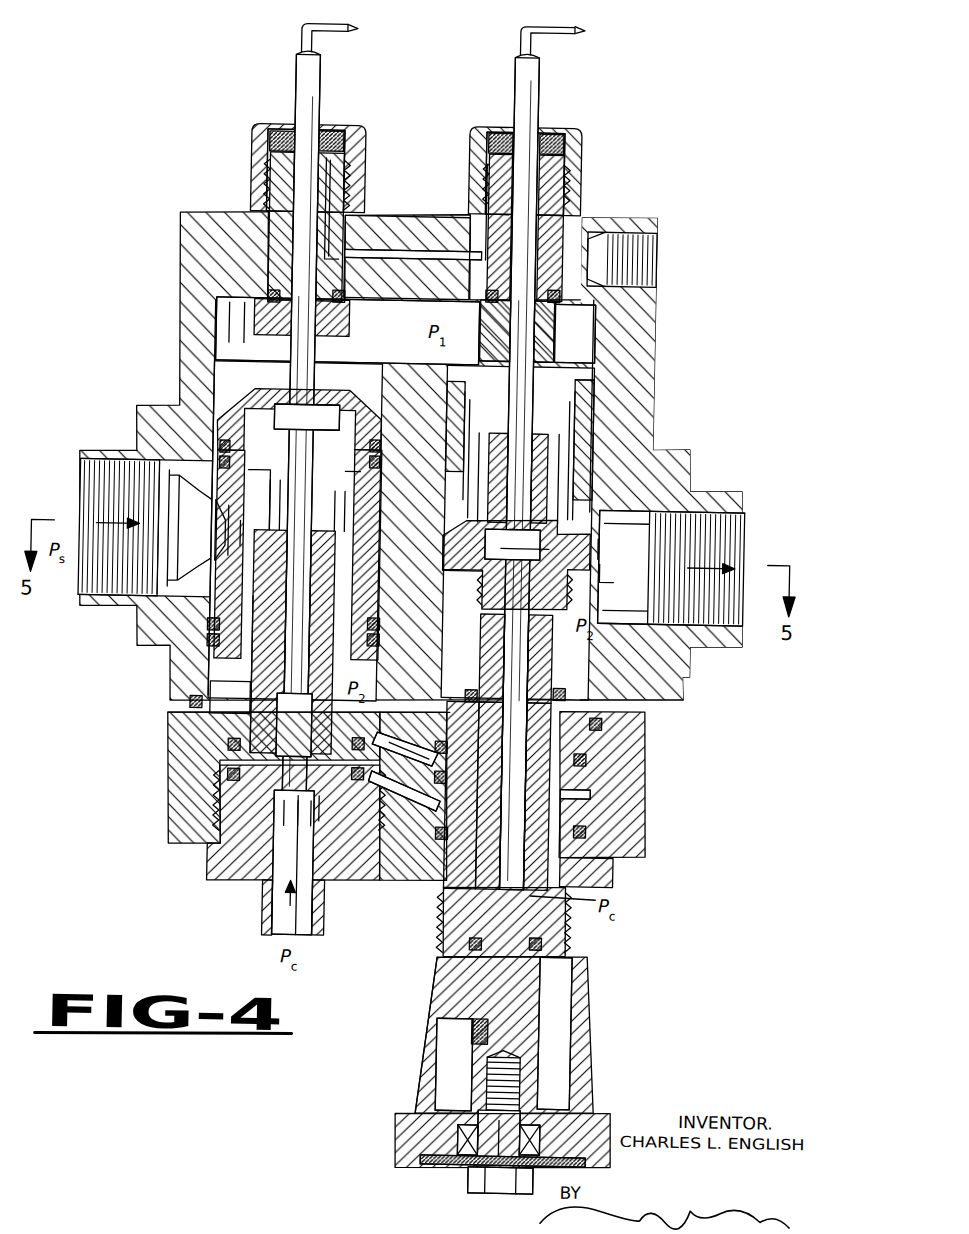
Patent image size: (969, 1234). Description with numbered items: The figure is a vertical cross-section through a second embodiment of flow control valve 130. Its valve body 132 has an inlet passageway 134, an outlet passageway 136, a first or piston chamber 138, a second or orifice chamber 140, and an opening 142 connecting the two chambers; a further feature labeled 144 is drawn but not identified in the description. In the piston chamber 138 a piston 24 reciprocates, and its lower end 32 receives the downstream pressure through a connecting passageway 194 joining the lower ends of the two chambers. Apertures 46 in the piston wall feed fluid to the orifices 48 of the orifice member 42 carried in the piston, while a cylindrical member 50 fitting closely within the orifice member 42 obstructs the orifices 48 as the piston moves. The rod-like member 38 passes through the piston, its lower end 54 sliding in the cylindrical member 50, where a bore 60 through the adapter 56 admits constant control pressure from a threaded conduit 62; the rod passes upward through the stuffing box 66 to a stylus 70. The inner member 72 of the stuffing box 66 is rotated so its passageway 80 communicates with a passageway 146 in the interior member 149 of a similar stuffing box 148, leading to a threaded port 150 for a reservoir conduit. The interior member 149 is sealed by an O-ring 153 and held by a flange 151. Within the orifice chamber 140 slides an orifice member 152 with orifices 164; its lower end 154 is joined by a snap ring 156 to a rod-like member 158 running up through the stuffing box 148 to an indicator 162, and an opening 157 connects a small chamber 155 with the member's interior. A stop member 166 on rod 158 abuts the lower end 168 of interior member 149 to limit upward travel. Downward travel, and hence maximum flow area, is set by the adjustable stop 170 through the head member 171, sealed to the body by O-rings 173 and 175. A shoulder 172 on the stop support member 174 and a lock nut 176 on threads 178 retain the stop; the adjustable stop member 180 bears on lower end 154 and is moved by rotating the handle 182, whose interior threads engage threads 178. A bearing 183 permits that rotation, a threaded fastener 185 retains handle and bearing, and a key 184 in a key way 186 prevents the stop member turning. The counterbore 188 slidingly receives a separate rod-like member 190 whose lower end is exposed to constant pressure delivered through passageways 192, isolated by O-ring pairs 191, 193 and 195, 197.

The pointer or stylus 70 is at (334, 30).
The stylus or indicator 162 is at (567, 27).
The packing gland 66 is at (259, 133).
The stuffing box 148 is at (573, 137).
The valve body 132 is at (187, 221).
The inner member 72 is at (338, 177).
The passageway 80 is at (332, 202).
The passage 144 is at (393, 252).
The interior member 149 is at (479, 179).
The passageway 146 is at (552, 190).
The threaded port 150 is at (648, 257).
The flow control valve 130 is at (144, 306).
The O-ring seal 153 is at (556, 294).
The opening 142 is at (357, 336).
The flange 151 is at (575, 333).
The piston chamber 138 is at (209, 371).
The piston 24 is at (331, 394).
The lower end 168 is at (491, 365).
The rod-like member 158 is at (526, 371).
The orifice chamber 140 is at (591, 376).
The orifice member 152 is at (591, 408).
The rod-like member 38 is at (298, 483).
The orifices 48 is at (343, 503).
The orifice member 42 is at (358, 481).
The stop member 166 is at (540, 452).
The orifices 164 is at (580, 467).
The inlet passageway 134 is at (98, 493).
The apertures 46 is at (229, 533).
The lower end 54 is at (299, 578).
The opening 157 is at (545, 538).
The small chamber 155 is at (594, 565).
The snap ring 156 is at (516, 564).
The outlet passageway 136 is at (724, 534).
The lower end 154 is at (460, 566).
The adjustable stop member 180 is at (559, 658).
The cylindrical member 50 is at (251, 676).
The lower end 32 is at (230, 696).
The counterbore 188 is at (491, 677).
The rod-like member 190 is at (541, 682).
The connecting passageway 194 is at (412, 729).
The O-ring 195 is at (570, 693).
The O-ring seal 173 is at (192, 705).
The O-ring seal 175 is at (607, 718).
The shoulder 172 is at (643, 732).
The head member 171 is at (204, 781).
The O-ring 191 is at (591, 757).
The passageways 192 is at (399, 782).
The bore 60 is at (305, 825).
The stop support member 174 is at (569, 816).
The O-ring 193 is at (592, 832).
The adapter 56 is at (221, 891).
The conduit 62 is at (324, 907).
The lock nut 176 is at (605, 871).
The O-ring 197 is at (538, 940).
The threads 178 is at (574, 927).
The adjustable stop 170 is at (597, 977).
The key 184 is at (498, 1019).
The key way 186 is at (490, 1064).
The adjusting handle 182 is at (434, 1058).
The bearing 183 is at (468, 1136).
The threaded fastener 185 is at (479, 1183).